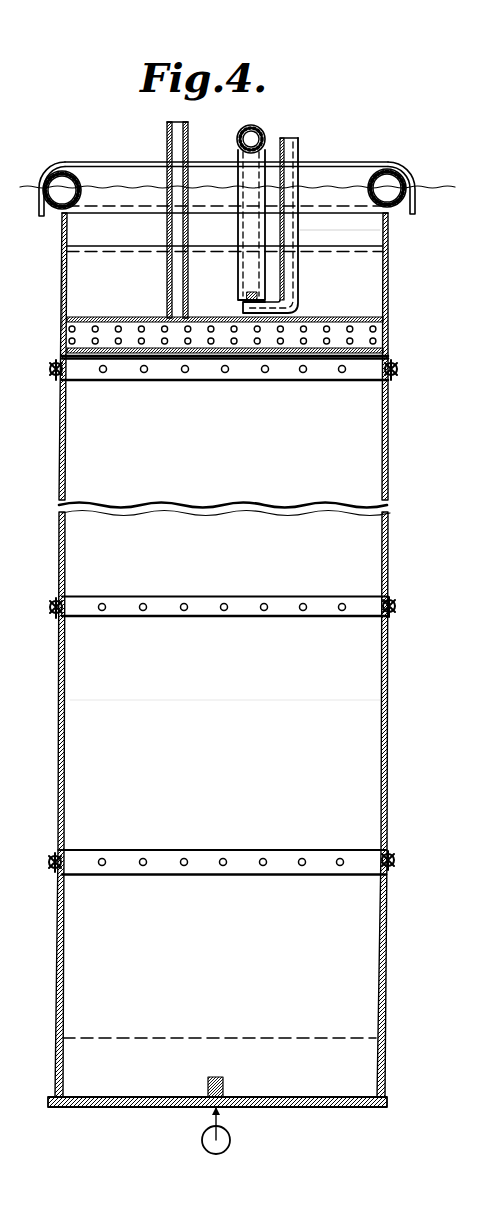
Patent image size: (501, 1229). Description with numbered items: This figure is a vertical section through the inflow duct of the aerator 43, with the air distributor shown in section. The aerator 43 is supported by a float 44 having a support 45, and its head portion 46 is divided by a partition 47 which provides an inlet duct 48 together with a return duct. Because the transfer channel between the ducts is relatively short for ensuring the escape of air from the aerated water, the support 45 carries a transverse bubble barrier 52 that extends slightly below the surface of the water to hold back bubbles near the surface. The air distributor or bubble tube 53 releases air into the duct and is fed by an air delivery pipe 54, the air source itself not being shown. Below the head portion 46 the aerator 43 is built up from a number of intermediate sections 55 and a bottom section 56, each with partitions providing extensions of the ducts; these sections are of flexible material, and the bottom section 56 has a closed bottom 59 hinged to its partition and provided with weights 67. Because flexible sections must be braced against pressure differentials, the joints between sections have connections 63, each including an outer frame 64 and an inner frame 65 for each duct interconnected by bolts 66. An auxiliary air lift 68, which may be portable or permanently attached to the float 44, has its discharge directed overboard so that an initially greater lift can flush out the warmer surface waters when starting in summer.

The aerator 43 is at (323, 266).
The float 44 is at (92, 177).
The support 45 is at (317, 163).
The head portion 46 is at (252, 356).
The partition 47 is at (78, 295).
The inlet duct 48 is at (348, 754).
The transverse bubble barrier 52 is at (102, 204).
The air distributor or bubble tube 53 is at (207, 343).
The air delivery pipe 54 is at (167, 148).
The intermediate sections 55 is at (390, 652).
The bottom section 56 is at (385, 958).
The closed bottom 59 is at (142, 1107).
The connections 63 is at (239, 847).
The outer frame 64 is at (56, 614).
The inner frame 65 is at (155, 612).
The bolts 66 is at (376, 608).
The weights 67 is at (232, 1140).
The auxiliary air lift 68 is at (240, 210).